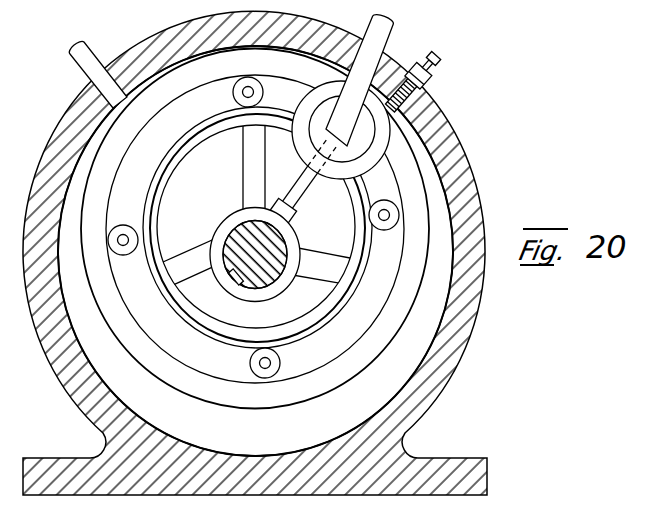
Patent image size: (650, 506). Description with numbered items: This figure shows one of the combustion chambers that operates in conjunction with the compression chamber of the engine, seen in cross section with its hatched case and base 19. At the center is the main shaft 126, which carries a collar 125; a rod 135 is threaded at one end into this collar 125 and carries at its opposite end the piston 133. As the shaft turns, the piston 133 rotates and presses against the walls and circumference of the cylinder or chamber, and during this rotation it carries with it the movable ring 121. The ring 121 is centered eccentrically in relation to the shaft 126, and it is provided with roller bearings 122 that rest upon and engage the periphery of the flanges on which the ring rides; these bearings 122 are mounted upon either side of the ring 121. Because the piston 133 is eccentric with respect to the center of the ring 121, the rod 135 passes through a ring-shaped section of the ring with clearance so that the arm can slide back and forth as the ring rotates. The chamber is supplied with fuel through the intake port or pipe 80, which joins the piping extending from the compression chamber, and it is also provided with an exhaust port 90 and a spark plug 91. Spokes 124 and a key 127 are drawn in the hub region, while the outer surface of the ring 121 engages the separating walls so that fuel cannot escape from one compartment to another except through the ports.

The base / housing 19 is at (41, 457).
The intake port 80 is at (393, 32).
The exhaust port 90 is at (78, 58).
The spark plug 91 is at (437, 78).
The movable ring 121 is at (228, 407).
The roller bearings 122 is at (386, 231).
The spoke 124 is at (242, 137).
The collar 125 is at (257, 227).
The main shaft 126 is at (275, 257).
The key 127 is at (238, 284).
The piston 133 is at (341, 130).
The rod 135 is at (312, 185).